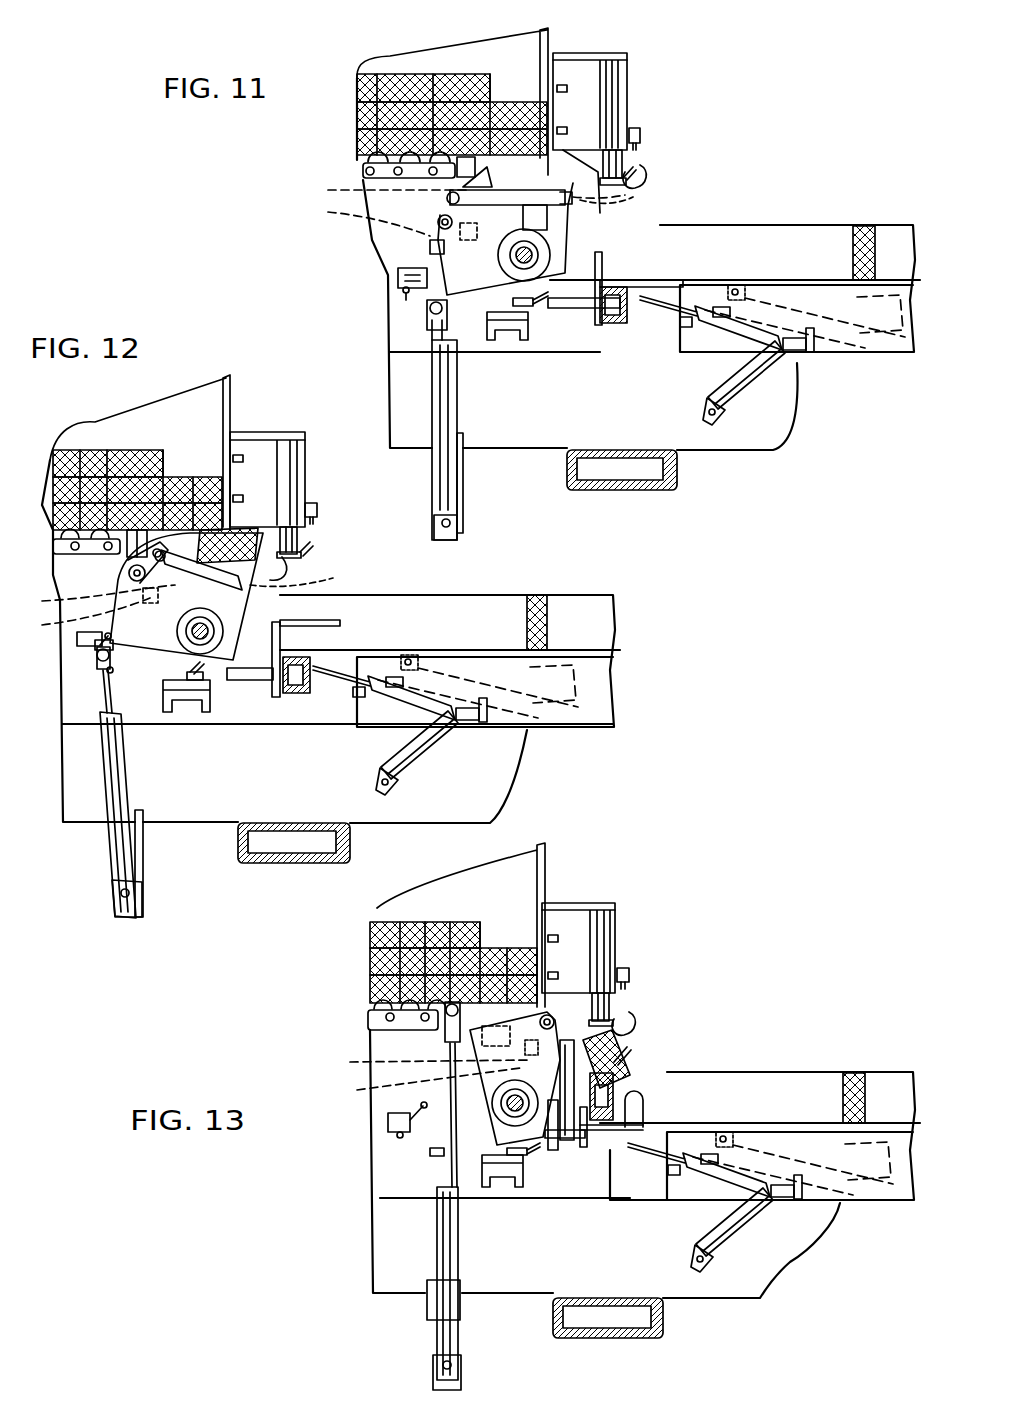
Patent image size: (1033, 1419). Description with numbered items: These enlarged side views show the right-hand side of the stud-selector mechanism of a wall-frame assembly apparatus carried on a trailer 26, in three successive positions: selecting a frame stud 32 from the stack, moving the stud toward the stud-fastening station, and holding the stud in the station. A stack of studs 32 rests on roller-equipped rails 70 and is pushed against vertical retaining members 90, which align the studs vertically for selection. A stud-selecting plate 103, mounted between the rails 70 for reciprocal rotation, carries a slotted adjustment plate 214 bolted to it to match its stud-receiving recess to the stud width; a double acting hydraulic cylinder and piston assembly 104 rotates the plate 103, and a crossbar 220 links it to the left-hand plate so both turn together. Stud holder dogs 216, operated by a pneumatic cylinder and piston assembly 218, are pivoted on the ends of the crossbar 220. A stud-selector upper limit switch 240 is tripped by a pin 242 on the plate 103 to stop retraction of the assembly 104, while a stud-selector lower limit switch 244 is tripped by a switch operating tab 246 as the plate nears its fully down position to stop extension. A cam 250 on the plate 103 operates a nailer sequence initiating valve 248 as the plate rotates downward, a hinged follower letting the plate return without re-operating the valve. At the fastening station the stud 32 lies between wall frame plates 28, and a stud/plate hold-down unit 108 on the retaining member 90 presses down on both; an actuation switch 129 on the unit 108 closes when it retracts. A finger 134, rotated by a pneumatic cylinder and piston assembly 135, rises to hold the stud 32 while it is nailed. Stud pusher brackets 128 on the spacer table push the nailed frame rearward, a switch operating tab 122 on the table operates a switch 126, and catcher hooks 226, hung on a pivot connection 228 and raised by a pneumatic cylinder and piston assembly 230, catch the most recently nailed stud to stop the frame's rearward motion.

In FIG. 11, the trailer 26 is at (527, 434).
In FIG. 12, the trailer 26 is at (209, 811).
In FIG. 13, the trailer 26 is at (747, 1280).
In FIG. 11, the wall frame plates 28 is at (793, 228).
In FIG. 12, the wall frame plates 28 is at (480, 584).
In FIG. 13, the wall frame plates 28 is at (790, 1078).
In FIG. 11, the frame stud 32 is at (443, 76).
In FIG. 12, the frame stud 32 is at (123, 450).
In FIG. 13, the frame stud 32 is at (373, 960).
In FIG. 11, the roller-equipped rails 70 is at (362, 183).
In FIG. 12, the roller-equipped rails 70 is at (63, 548).
In FIG. 13, the roller-equipped rails 70 is at (370, 1018).
In FIG. 11, the vertical retaining members 90 is at (547, 123).
In FIG. 12, the vertical retaining members 90 is at (140, 452).
In FIG. 13, the vertical retaining members 90 is at (461, 925).
In FIG. 11, the stud-selecting plate 103 is at (433, 250).
In FIG. 12, the stud-selecting plate 103 is at (255, 590).
In FIG. 13, the stud-selecting plate 103 is at (390, 1121).
In FIG. 11, the hydraulic cylinder and piston assembly 104 is at (447, 413).
In FIG. 12, the hydraulic cylinder and piston assembly 104 is at (110, 769).
In FIG. 13, the hydraulic cylinder and piston assembly 104 is at (460, 1330).
In FIG. 11, the stud/plate hold-down unit 108 is at (640, 168).
In FIG. 12, the stud/plate hold-down unit 108 is at (300, 520).
In FIG. 13, the stud/plate hold-down unit 108 is at (626, 1012).
In FIG. 11, the switch operating tab 122 is at (598, 325).
In FIG. 12, the switch operating tab 122 is at (228, 686).
In FIG. 13, the switch operating tab 122 is at (611, 1119).
In FIG. 11, the switch 126 is at (487, 326).
In FIG. 12, the switch 126 is at (168, 693).
In FIG. 13, the switch 126 is at (537, 1183).
In FIG. 11, the stud pusher brackets 128 is at (625, 280).
In FIG. 12, the stud pusher brackets 128 is at (392, 615).
In FIG. 13, the stud pusher brackets 128 is at (587, 1170).
In FIG. 11, the actuation switch 129 is at (640, 134).
In FIG. 12, the actuation switch 129 is at (318, 511).
In FIG. 13, the actuation switch 129 is at (628, 968).
In FIG. 11, the finger 134 is at (680, 277).
In FIG. 12, the finger 134 is at (353, 650).
In FIG. 13, the finger 134 is at (675, 1130).
In FIG. 11, the pneumatic cylinder and piston assembly 135 is at (710, 333).
In FIG. 12, the pneumatic cylinder and piston assembly 135 is at (385, 729).
In FIG. 13, the pneumatic cylinder and piston assembly 135 is at (680, 1193).
In FIG. 11, the slotted adjustment plate 214 is at (460, 155).
In FIG. 12, the slotted adjustment plate 214 is at (173, 537).
In FIG. 13, the slotted adjustment plate 214 is at (575, 1050).
In FIG. 11, the stud holder dogs 216 is at (580, 145).
In FIG. 12, the stud holder dogs 216 is at (255, 530).
In FIG. 13, the stud holder dogs 216 is at (612, 1145).
In FIG. 11, the pneumatic cylinder and piston assembly 218 is at (505, 239).
In FIG. 12, the pneumatic cylinder and piston assembly 218 is at (188, 558).
In FIG. 13, the pneumatic cylinder and piston assembly 218 is at (600, 1047).
In FIG. 11, the crossbar 220 is at (595, 205).
In FIG. 12, the crossbar 220 is at (322, 583).
In FIG. 13, the crossbar 220 is at (612, 1052).
In FIG. 11, the catcher hooks 226 is at (863, 353).
In FIG. 12, the catcher hooks 226 is at (590, 705).
In FIG. 13, the catcher hooks 226 is at (851, 1200).
In FIG. 11, the pivot connection 228 is at (737, 293).
In FIG. 12, the pivot connection 228 is at (410, 663).
In FIG. 13, the pivot connection 228 is at (740, 1135).
In FIG. 11, the pneumatic cylinder and piston assembly 230 is at (740, 400).
In FIG. 12, the pneumatic cylinder and piston assembly 230 is at (430, 746).
In FIG. 13, the pneumatic cylinder and piston assembly 230 is at (737, 1235).
In FIG. 11, the stud-selector upper limit switch 240 is at (398, 290).
In FIG. 12, the stud-selector upper limit switch 240 is at (110, 673).
In FIG. 13, the stud-selector upper limit switch 240 is at (398, 1133).
In FIG. 11, the pin 242 is at (398, 274).
In FIG. 12, the pin 242 is at (80, 656).
In FIG. 13, the pin 242 is at (443, 1153).
In FIG. 11, the stud-selector lower limit switch 244 is at (672, 280).
In FIG. 12, the stud-selector lower limit switch 244 is at (178, 706).
In FIG. 13, the stud-selector lower limit switch 244 is at (490, 1158).
In FIG. 11, the switch operating tab 246 is at (636, 180).
In FIG. 12, the switch operating tab 246 is at (313, 549).
In FIG. 13, the switch operating tab 246 is at (620, 1063).
In FIG. 11, the nailer sequence initiating valve 248 is at (450, 188).
In FIG. 12, the nailer sequence initiating valve 248 is at (87, 598).
In FIG. 13, the nailer sequence initiating valve 248 is at (419, 1060).
In FIG. 11, the cam 250 is at (356, 216).
In FIG. 12, the cam 250 is at (76, 618).
In FIG. 13, the cam 250 is at (415, 1086).